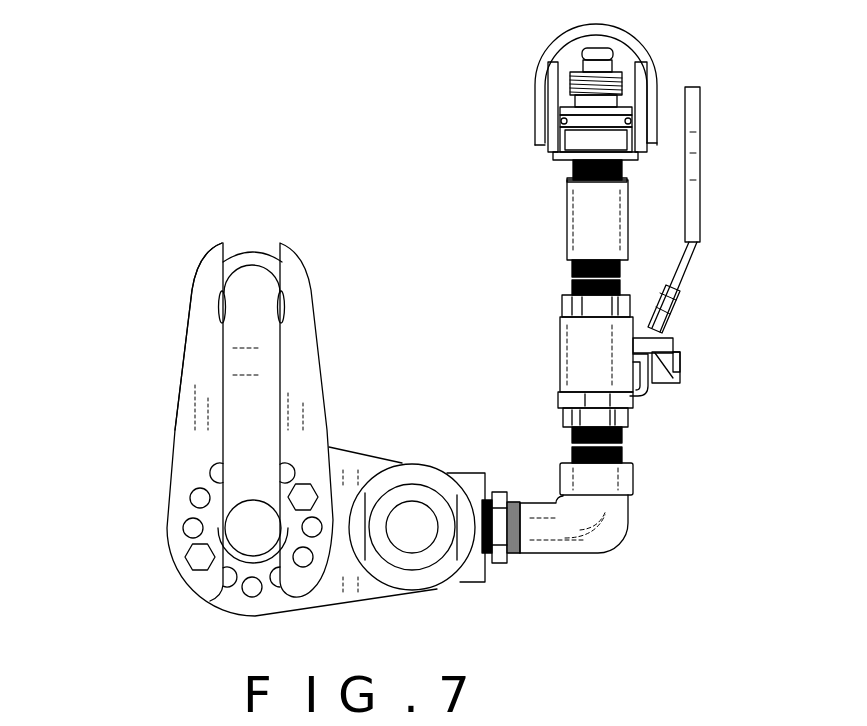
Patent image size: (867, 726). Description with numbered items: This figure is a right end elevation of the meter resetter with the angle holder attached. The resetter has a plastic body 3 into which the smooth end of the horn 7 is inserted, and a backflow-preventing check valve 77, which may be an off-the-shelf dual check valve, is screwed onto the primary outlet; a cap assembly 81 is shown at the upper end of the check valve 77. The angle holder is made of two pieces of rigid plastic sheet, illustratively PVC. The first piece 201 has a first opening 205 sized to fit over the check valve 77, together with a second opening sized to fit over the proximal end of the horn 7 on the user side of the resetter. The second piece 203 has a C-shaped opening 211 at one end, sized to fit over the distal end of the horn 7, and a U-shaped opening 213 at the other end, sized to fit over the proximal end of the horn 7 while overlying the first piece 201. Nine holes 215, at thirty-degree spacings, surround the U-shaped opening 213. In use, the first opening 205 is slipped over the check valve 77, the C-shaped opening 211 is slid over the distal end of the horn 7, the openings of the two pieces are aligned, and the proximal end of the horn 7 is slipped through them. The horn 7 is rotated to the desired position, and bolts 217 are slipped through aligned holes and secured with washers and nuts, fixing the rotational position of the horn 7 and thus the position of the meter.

The plastic body 3 is at (470, 582).
The horn 7 is at (258, 347).
The backflow-preventing check valve 77 is at (420, 495).
The cap assembly 81 is at (540, 156).
The first piece of the angle holder 201 is at (340, 447).
The second piece of the angle holder 203 is at (295, 353).
The first opening 205 is at (407, 472).
The C-shaped opening 211 is at (220, 308).
The U-shaped opening 213 is at (205, 530).
The holes 215 is at (200, 498).
The bolts 217 is at (197, 557).